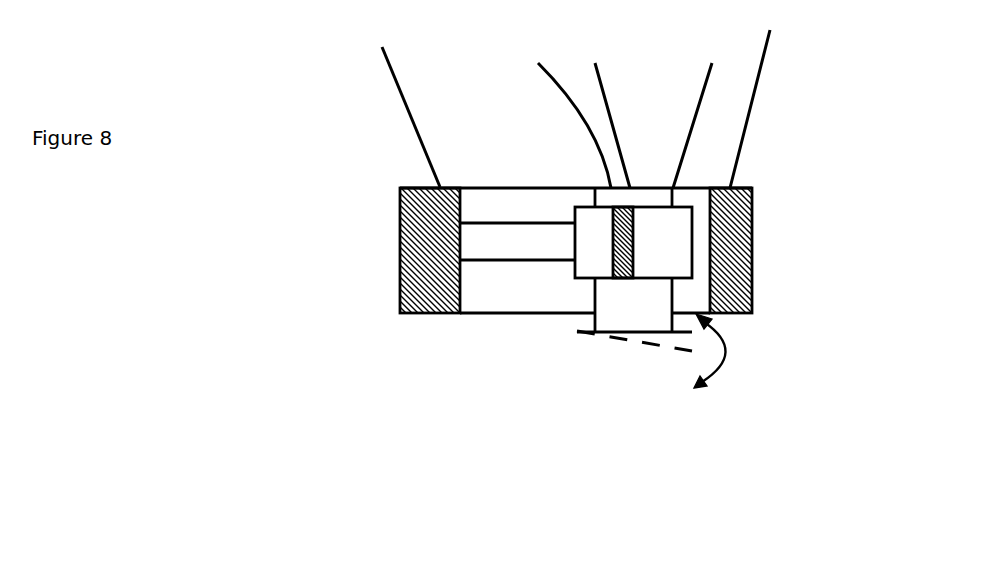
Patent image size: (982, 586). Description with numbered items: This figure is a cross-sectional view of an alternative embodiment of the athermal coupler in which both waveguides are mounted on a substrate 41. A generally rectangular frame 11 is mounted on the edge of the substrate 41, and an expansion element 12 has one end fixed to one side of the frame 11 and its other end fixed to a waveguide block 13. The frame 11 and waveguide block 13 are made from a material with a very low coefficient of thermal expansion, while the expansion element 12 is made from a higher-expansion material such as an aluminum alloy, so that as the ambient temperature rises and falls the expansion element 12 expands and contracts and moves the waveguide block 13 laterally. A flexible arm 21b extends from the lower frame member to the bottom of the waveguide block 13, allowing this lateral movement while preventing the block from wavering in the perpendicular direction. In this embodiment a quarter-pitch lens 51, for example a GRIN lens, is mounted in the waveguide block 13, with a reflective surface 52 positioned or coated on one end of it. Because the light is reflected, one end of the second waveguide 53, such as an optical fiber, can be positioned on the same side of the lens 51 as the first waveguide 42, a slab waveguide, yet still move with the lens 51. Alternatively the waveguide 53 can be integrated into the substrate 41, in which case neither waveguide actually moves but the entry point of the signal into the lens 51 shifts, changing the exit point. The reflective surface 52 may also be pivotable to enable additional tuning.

The frame 11 is at (752, 262).
The expansion element 12 is at (498, 243).
The waveguide block 13 is at (672, 225).
The flexible arm 21b is at (612, 247).
The substrate 41 is at (521, 134).
The slab waveguide 42 is at (676, 80).
The quarter-pitch lens 51 is at (633, 315).
The reflective surface 52 is at (613, 335).
The second waveguide 53 is at (537, 82).